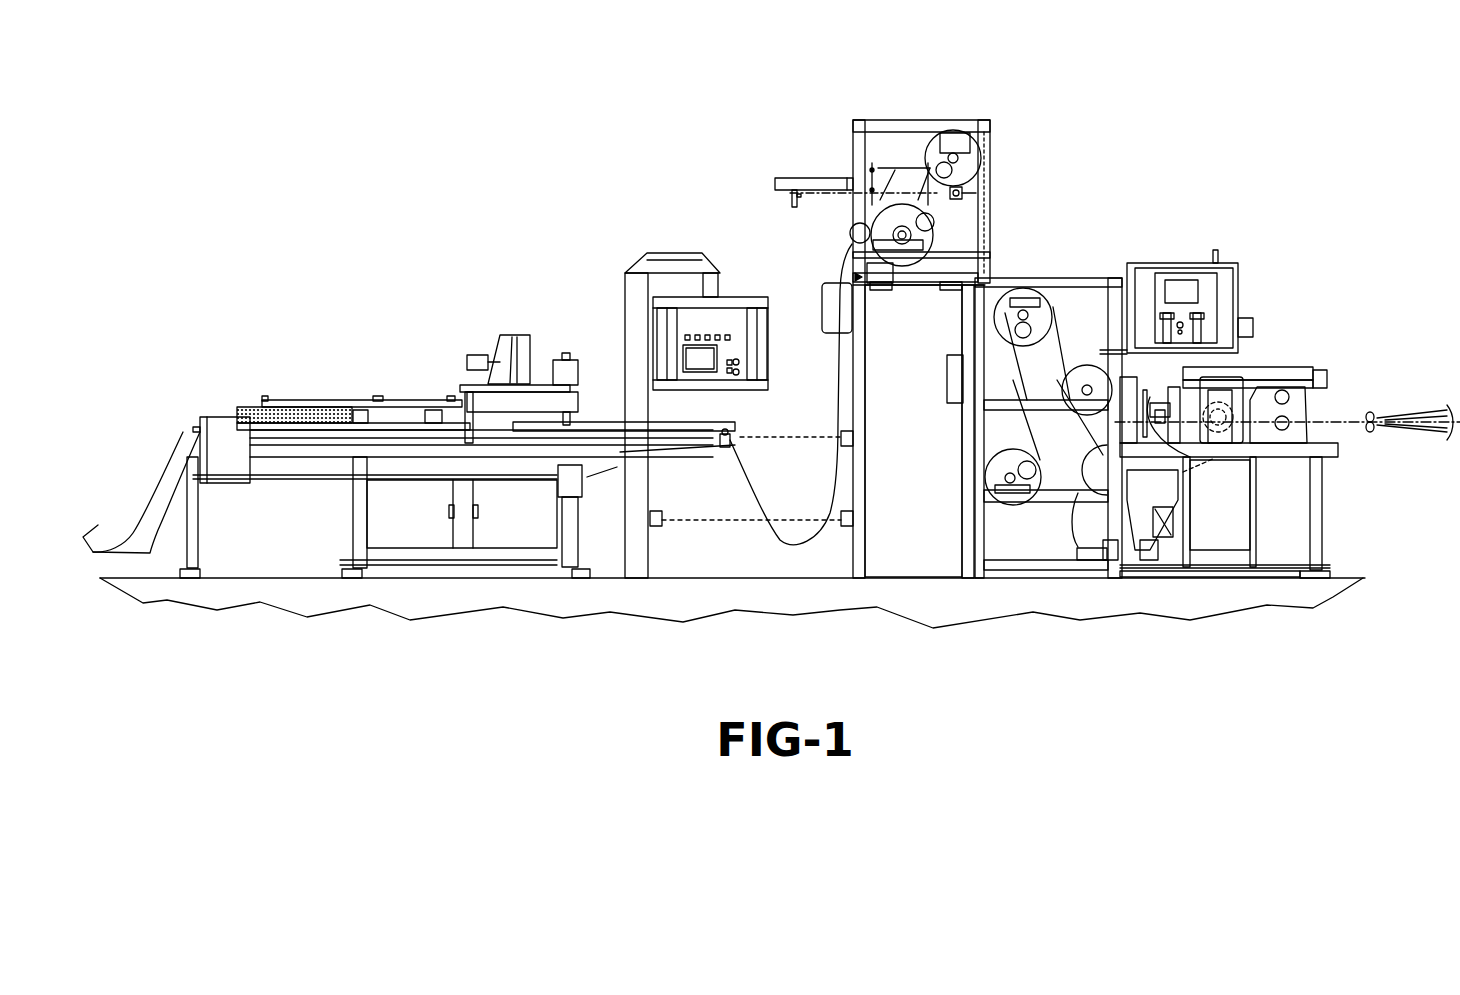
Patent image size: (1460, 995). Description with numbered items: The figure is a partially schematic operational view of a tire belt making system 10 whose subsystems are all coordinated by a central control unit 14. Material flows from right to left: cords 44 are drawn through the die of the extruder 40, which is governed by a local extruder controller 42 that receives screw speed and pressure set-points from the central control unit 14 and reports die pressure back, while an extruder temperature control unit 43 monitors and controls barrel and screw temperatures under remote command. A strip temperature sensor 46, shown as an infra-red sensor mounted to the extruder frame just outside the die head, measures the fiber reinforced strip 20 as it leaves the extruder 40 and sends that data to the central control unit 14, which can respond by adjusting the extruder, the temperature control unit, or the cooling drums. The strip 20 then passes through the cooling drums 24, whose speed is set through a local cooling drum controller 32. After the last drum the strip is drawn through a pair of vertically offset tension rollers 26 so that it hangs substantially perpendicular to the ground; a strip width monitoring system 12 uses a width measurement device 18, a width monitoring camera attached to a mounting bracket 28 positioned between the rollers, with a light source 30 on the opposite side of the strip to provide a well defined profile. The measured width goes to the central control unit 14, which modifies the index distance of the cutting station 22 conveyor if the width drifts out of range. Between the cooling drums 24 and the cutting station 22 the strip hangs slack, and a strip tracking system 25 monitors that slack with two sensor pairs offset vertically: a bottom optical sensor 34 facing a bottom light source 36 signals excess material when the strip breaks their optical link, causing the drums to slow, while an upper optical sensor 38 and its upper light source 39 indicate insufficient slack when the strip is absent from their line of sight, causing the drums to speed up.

The tire belt making system 10 is at (639, 158).
The strip width monitoring system 12 is at (825, 246).
The central control unit 14 is at (740, 297).
The width measurement device 18 is at (790, 205).
The fiber reinforced strip 20 is at (815, 410).
The cutting station 22 is at (462, 322).
The cooling drums 24 is at (1070, 268).
The strip tracking system 25 is at (722, 555).
The tension rollers 26 is at (930, 146).
The mounting bracket 28 is at (812, 178).
The light source 30 is at (985, 213).
The cooling drum controller 32 is at (950, 398).
The bottom optical sensor 34 is at (655, 528).
The bottom light source 36 is at (846, 528).
The upper optical sensor 38 is at (722, 446).
The upper light source 39 is at (852, 437).
The extruder 40 is at (1223, 403).
The extruder controller 42 is at (1230, 255).
The extruder temperature control unit 43 is at (1253, 320).
The cords 44 is at (1350, 412).
The strip temperature sensor 46 is at (1177, 387).